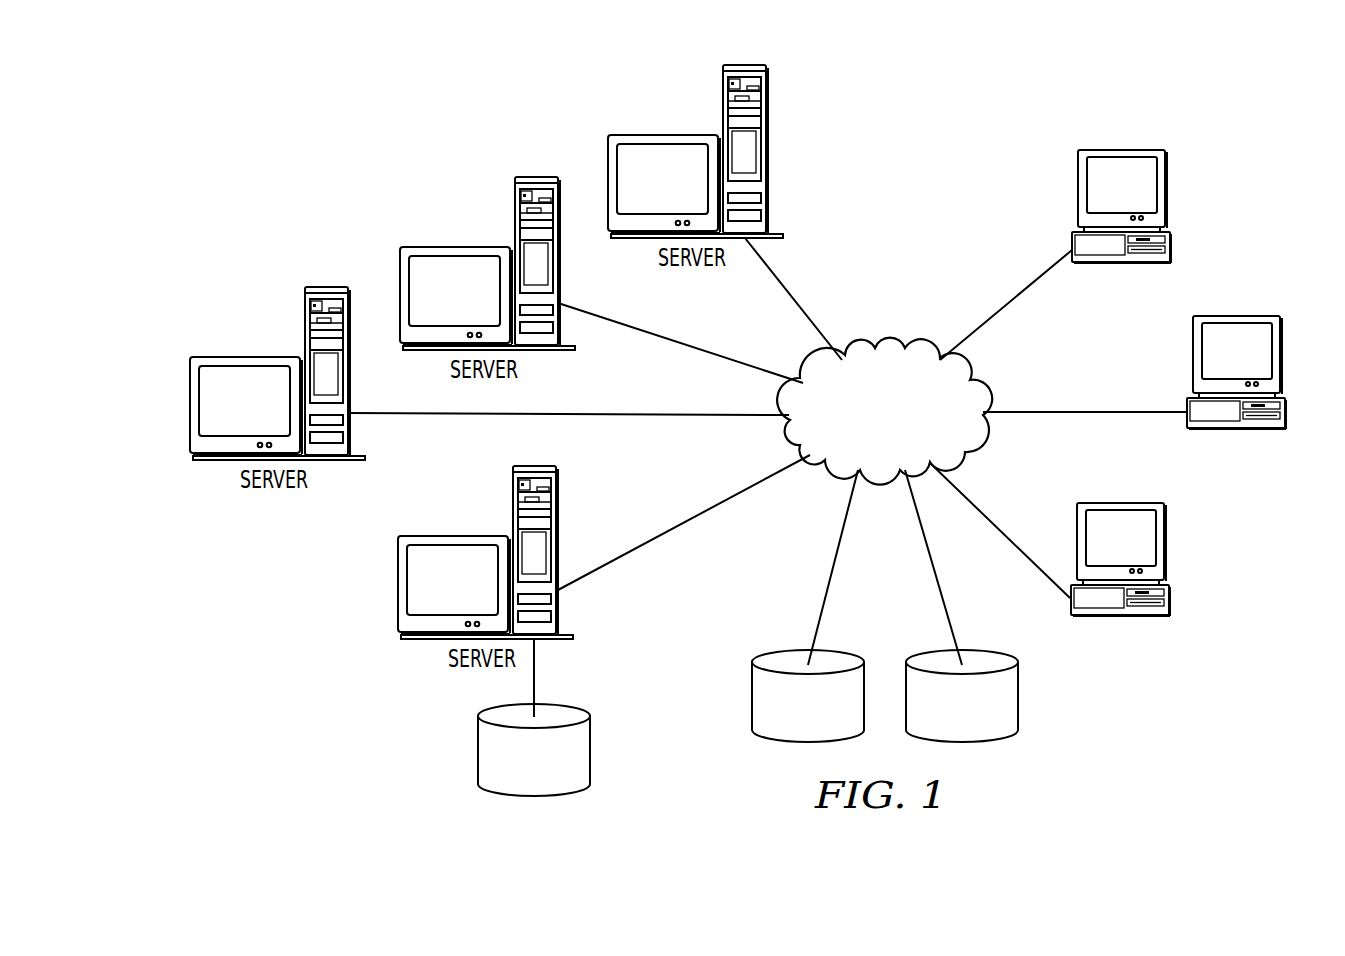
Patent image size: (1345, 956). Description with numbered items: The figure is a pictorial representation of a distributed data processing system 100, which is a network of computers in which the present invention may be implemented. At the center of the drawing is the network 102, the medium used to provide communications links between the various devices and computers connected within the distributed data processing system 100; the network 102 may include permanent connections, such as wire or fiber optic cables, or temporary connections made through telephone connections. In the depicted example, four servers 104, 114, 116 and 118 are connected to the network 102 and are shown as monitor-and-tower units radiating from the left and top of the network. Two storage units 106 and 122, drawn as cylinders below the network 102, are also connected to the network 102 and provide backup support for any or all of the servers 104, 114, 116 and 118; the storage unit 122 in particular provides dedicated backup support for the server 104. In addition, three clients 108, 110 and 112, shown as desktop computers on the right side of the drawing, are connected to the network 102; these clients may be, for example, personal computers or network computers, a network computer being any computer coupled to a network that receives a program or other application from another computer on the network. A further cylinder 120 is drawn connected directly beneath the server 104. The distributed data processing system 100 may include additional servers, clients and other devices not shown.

The distributed data processing system 100 is at (986, 110).
The network 102 is at (866, 423).
The server 104 is at (459, 523).
The storage unit 106 is at (1018, 697).
The client 108 is at (1160, 131).
The client 110 is at (1279, 295).
The client 112 is at (1185, 501).
The server 114 is at (249, 343).
The server 116 is at (459, 233).
The server 118 is at (667, 121).
The storage unit 120 is at (477, 749).
The storage unit 122 is at (752, 695).